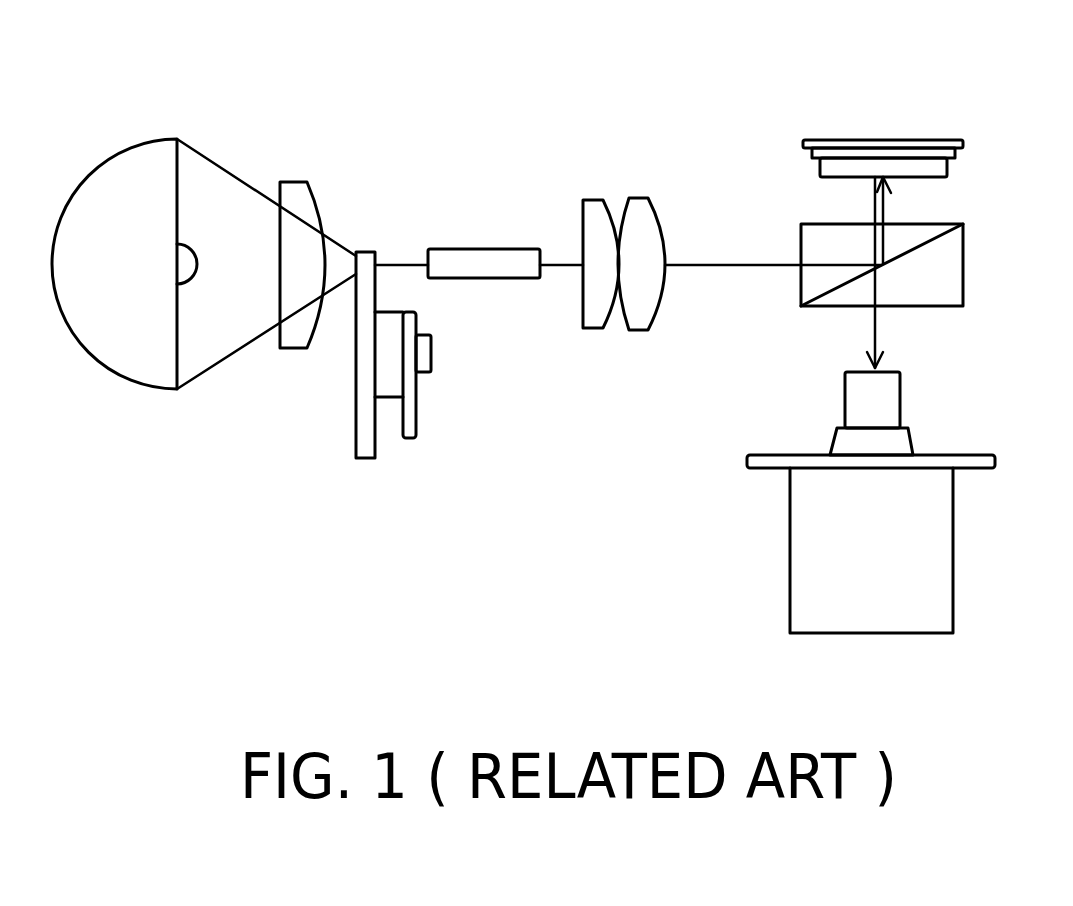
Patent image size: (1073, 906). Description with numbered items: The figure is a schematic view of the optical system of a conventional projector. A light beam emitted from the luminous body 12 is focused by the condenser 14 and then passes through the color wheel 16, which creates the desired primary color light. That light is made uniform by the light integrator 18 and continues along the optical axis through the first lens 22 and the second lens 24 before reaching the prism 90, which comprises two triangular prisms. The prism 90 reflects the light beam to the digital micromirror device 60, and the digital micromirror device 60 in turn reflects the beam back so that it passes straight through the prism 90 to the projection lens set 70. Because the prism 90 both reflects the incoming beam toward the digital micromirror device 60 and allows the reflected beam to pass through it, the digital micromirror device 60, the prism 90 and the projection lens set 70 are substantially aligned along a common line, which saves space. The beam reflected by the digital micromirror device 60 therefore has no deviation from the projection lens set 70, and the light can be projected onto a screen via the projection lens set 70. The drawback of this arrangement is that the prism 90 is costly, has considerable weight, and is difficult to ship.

The luminous body 12 is at (120, 162).
The condenser 14 is at (291, 180).
The color wheel 16 is at (362, 251).
The light integrator 18 is at (481, 248).
The first lens 22 is at (598, 330).
The second lens 24 is at (637, 197).
The digital micromirror device 60 is at (880, 140).
The projection lens set 70 is at (940, 549).
The prism 90 is at (955, 268).